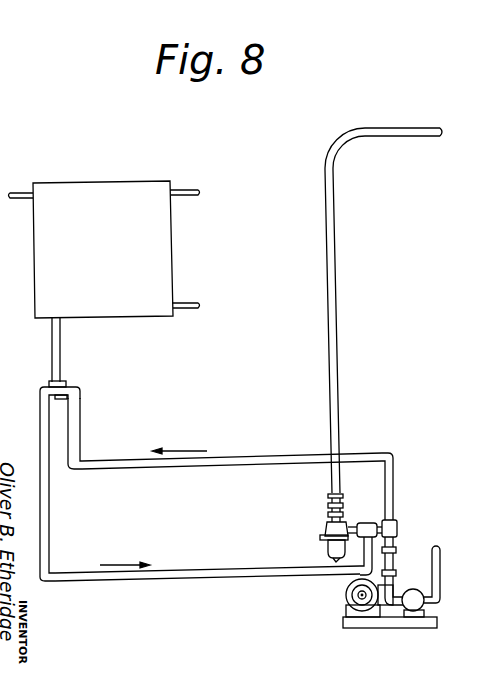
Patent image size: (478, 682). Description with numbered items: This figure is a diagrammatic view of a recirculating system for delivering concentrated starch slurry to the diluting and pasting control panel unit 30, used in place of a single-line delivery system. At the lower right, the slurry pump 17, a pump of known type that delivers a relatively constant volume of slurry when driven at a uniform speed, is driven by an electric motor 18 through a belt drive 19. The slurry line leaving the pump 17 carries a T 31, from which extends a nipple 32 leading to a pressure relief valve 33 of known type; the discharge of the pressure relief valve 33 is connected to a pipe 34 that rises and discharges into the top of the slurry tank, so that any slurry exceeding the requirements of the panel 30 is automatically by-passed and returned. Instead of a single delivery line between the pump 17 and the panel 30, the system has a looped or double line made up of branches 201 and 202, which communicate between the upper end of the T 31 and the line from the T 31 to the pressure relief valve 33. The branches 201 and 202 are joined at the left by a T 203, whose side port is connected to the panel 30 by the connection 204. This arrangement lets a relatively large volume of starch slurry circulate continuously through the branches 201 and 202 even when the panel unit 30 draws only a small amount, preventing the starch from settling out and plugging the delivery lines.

The control panel unit 30 is at (89, 180).
The connection 204 is at (61, 348).
The T 203 is at (68, 397).
The branch 201 is at (267, 456).
The branch 202 is at (243, 567).
The pipe 34 is at (327, 341).
The pressure relief valve 33 is at (324, 528).
The nipple 32 is at (355, 523).
The T 31 is at (397, 526).
The electric motor 18 is at (350, 598).
The belt drive 19 is at (391, 613).
The slurry pump 17 is at (414, 603).